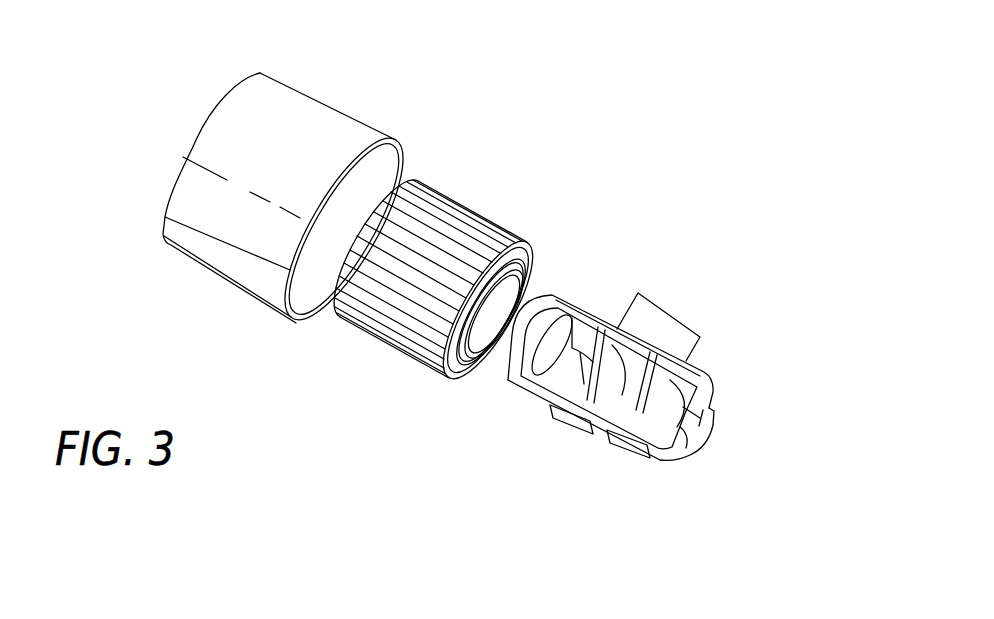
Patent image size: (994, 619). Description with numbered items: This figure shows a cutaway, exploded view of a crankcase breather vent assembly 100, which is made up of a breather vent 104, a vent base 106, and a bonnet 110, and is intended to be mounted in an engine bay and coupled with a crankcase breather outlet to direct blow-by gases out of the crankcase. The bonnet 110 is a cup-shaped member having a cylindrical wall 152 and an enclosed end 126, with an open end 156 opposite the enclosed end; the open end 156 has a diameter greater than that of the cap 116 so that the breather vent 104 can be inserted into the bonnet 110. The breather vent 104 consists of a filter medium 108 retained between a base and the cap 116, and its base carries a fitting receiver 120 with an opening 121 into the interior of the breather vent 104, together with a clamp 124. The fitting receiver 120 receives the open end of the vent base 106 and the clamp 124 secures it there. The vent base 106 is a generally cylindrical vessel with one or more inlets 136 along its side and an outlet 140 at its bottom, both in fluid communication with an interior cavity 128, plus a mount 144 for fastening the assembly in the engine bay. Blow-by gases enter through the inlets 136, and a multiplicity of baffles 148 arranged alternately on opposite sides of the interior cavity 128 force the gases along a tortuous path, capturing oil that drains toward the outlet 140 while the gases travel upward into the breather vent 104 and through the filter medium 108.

The crankcase breather vent assembly 100 is at (558, 72).
The breather vent 104 is at (358, 375).
The vent base 106 is at (688, 480).
The filter medium 108 is at (463, 212).
The bonnet 110 is at (195, 280).
The cap 116 is at (337, 285).
The fitting receiver 120 is at (528, 273).
The opening 121 is at (492, 335).
The clamp 124 is at (526, 254).
The enclosed end 126 is at (205, 122).
The interior cavity 128 is at (540, 363).
The inlets 136 is at (573, 415).
The outlet 140 is at (700, 423).
The mount 144 is at (673, 320).
The baffles 148 is at (668, 375).
The cylindrical wall 152 is at (300, 107).
The open end 156 is at (392, 130).